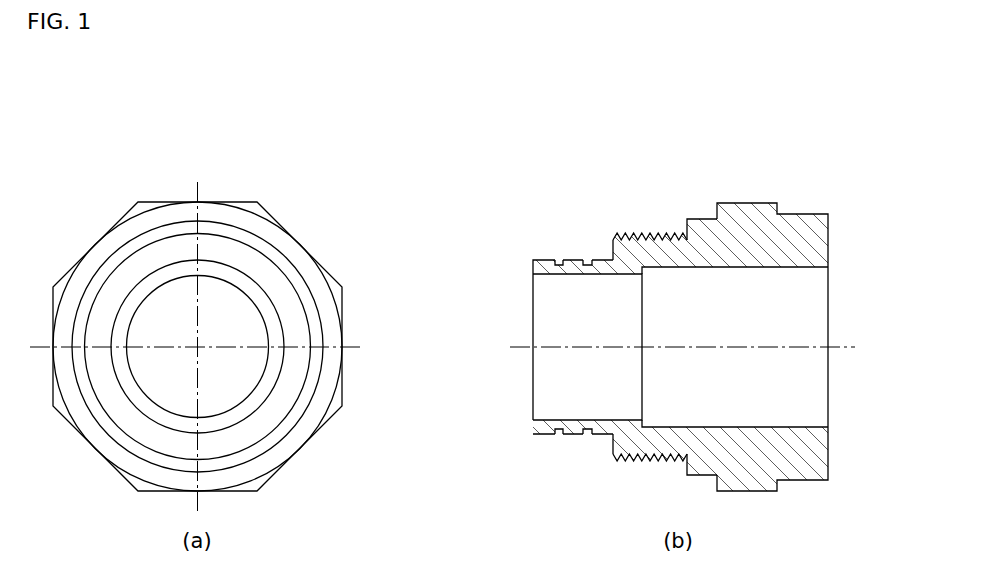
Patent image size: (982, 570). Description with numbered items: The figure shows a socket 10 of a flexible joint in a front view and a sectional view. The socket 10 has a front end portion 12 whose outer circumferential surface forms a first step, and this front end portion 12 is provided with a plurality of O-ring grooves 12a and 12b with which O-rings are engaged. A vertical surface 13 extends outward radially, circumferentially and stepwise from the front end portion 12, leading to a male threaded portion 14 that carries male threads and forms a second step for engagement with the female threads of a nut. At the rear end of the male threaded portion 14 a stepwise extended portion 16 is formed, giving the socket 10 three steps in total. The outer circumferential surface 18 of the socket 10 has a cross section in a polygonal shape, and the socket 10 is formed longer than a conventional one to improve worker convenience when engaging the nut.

The socket 10 is at (100, 194).
The front end portion 12 is at (533, 265).
The O-ring groove 12a is at (559, 259).
The O-ring groove 12b is at (587, 258).
The vertical surface 13 is at (612, 256).
The male threaded portion 14 is at (648, 237).
The extended portion 16 is at (700, 219).
The outer circumferential surface 18 is at (747, 202).